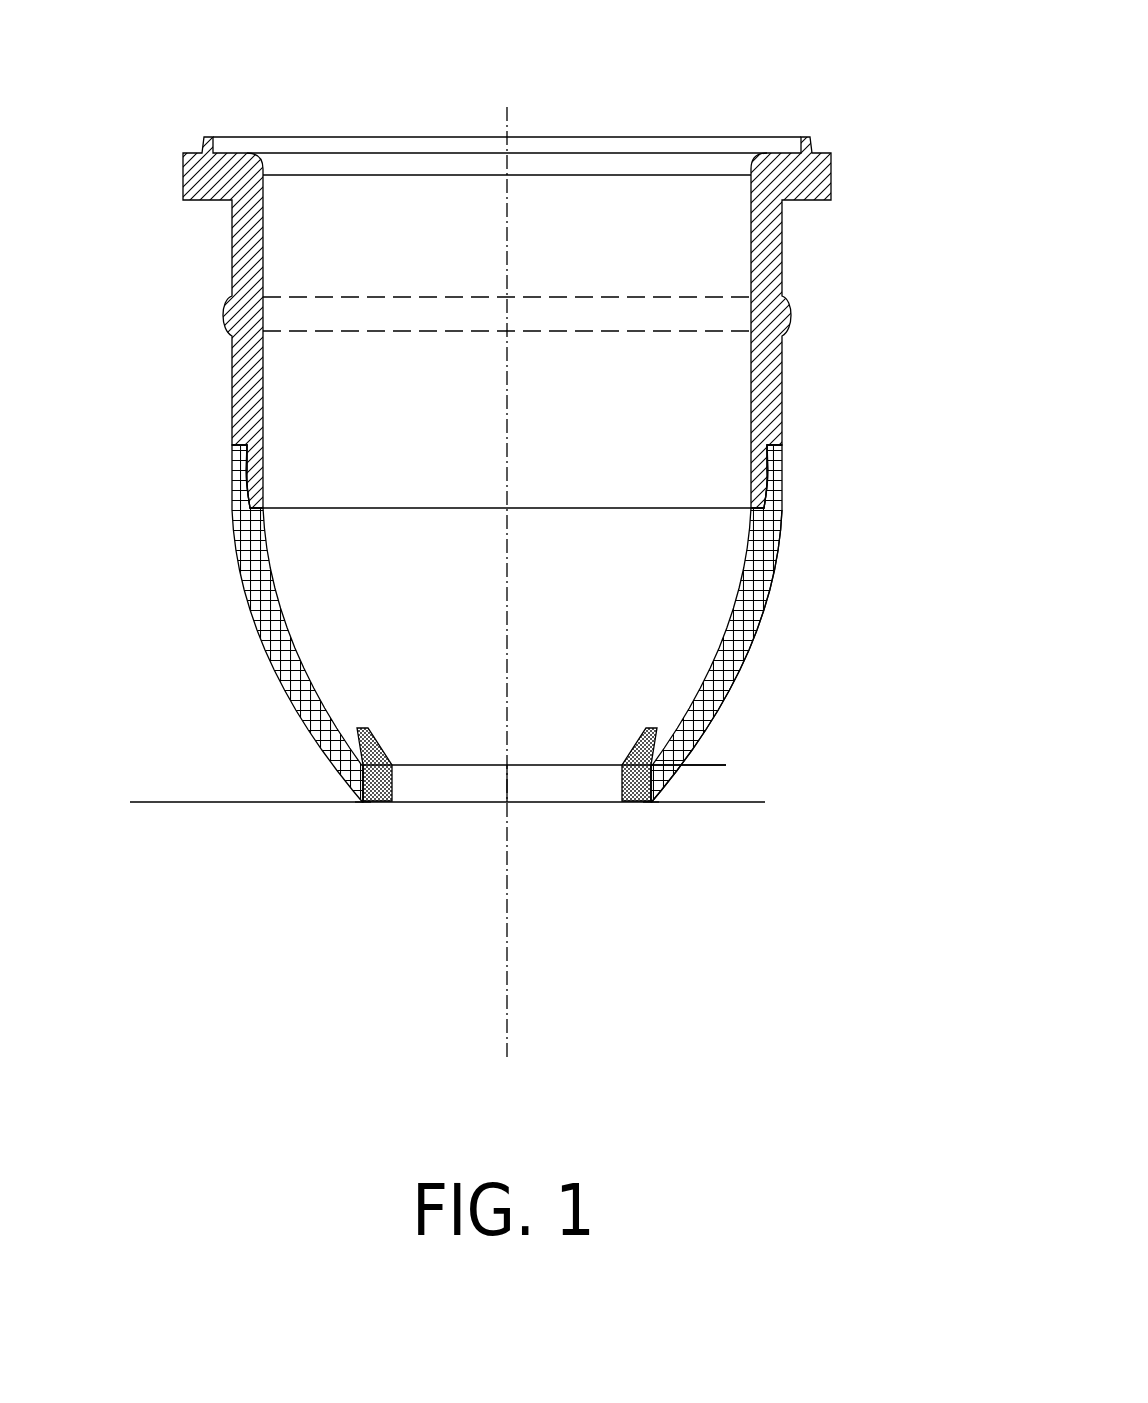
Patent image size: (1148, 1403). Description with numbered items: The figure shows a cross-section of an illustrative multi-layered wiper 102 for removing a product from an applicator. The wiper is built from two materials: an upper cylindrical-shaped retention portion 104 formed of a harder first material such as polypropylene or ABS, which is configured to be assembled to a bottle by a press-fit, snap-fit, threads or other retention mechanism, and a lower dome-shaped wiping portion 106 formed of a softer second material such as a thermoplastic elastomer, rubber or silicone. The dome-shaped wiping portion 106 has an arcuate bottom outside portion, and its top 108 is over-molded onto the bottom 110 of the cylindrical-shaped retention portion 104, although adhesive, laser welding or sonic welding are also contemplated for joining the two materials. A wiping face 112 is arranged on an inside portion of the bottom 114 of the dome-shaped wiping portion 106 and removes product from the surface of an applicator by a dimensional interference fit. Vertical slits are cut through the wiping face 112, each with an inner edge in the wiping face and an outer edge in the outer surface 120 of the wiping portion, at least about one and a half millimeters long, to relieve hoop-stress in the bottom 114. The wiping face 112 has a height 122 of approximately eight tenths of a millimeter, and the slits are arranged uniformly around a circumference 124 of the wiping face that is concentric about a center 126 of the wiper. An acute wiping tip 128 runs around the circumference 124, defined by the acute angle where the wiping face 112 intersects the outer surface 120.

The multi-layered wiper 102 is at (152, 38).
The cylindrical-shaped retention portion 104 is at (790, 508).
The dome-shaped wiping portion 106 is at (363, 802).
The top 108 is at (254, 445).
The bottom 110 is at (270, 467).
The wiping face 112 is at (406, 784).
The bottom 114 is at (359, 807).
The outer surface 120 is at (748, 684).
The height 122 is at (720, 742).
The circumference 124 is at (651, 802).
The center 126 is at (507, 599).
The acute wiping tip 128 is at (650, 807).